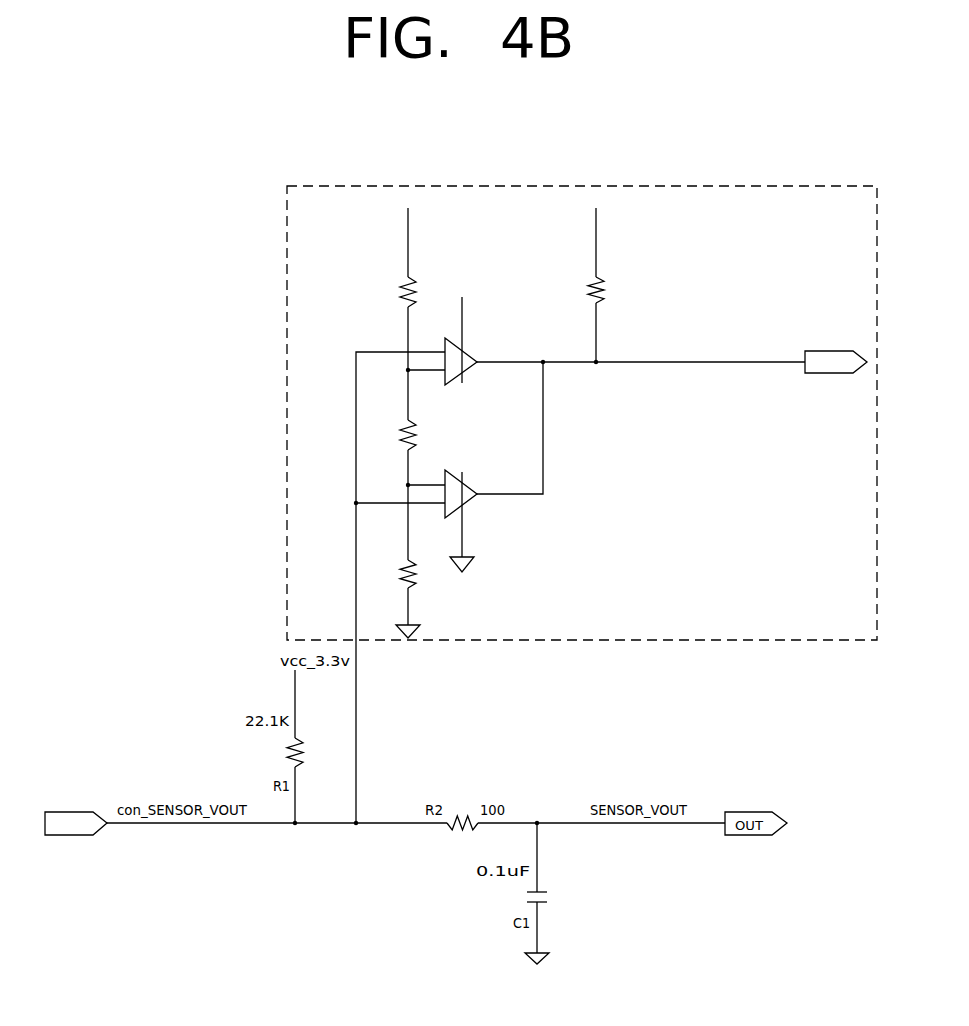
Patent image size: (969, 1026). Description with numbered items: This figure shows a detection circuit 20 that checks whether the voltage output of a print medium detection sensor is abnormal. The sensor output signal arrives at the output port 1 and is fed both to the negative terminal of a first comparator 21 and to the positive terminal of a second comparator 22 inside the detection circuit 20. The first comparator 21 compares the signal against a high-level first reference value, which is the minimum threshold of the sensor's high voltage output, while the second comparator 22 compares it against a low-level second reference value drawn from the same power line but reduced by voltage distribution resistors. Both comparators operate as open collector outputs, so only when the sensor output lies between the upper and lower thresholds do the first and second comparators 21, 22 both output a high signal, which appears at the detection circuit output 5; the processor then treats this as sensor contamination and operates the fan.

The output port 1 is at (70, 838).
The detection circuit output 5 is at (827, 350).
The detection circuit 20 is at (718, 186).
The first comparator 21 is at (467, 352).
The second comparator 22 is at (467, 484).